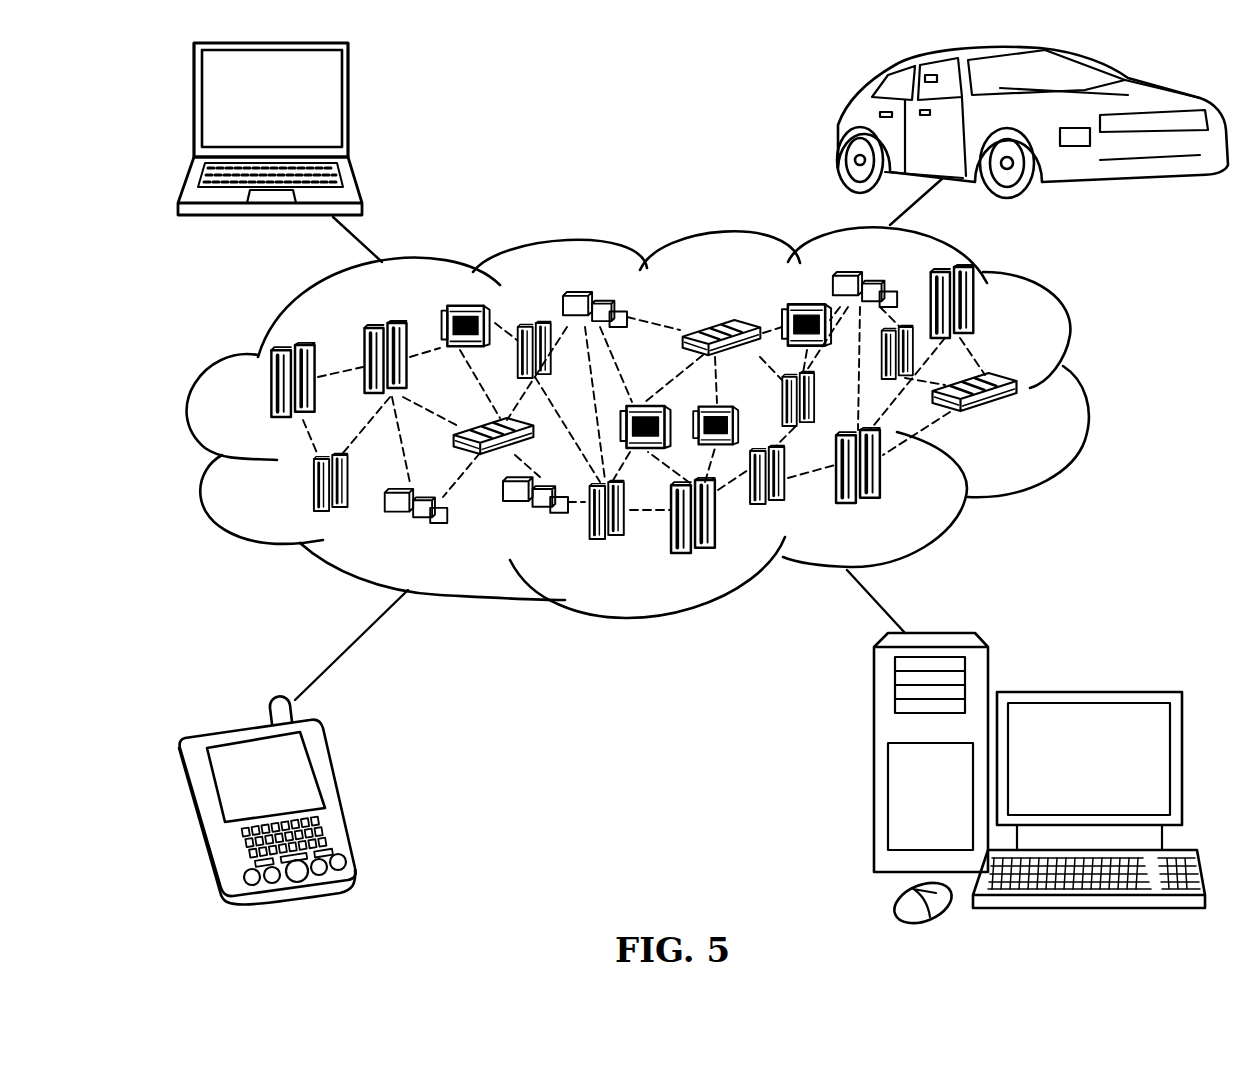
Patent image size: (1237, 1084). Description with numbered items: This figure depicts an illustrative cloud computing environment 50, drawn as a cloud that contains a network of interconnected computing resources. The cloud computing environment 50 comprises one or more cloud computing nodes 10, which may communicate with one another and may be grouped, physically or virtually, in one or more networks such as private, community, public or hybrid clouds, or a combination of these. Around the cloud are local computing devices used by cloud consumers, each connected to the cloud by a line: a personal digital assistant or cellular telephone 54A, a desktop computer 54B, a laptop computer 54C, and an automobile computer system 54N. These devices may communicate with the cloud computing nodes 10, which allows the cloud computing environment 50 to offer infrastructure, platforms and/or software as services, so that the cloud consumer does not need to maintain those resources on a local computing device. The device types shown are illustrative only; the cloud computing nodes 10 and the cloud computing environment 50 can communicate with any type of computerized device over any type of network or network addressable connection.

The cloud computing node 10 is at (1022, 424).
The cloud computing environment 50 is at (1090, 392).
The personal digital assistant or cellular telephone 54A is at (340, 788).
The desktop computer 54B is at (1087, 692).
The laptop computer 54C is at (350, 108).
The automobile computer system 54N is at (840, 125).